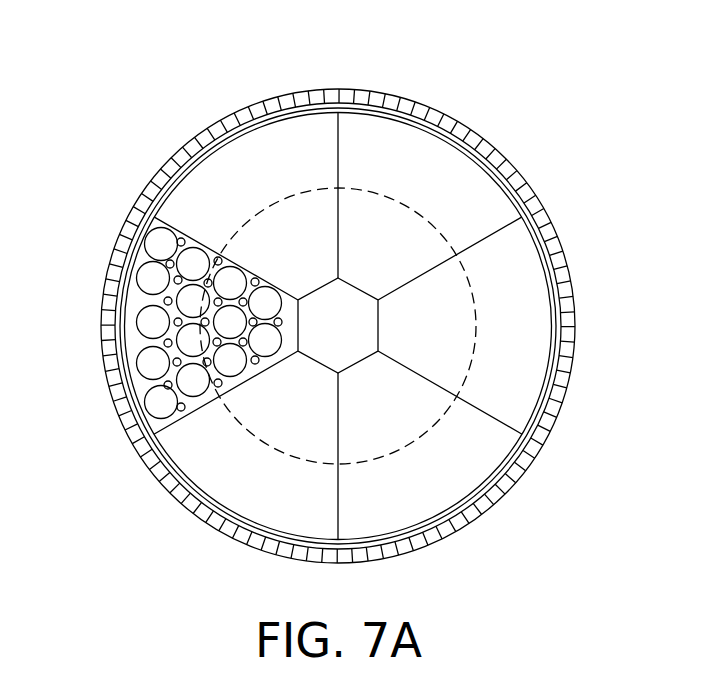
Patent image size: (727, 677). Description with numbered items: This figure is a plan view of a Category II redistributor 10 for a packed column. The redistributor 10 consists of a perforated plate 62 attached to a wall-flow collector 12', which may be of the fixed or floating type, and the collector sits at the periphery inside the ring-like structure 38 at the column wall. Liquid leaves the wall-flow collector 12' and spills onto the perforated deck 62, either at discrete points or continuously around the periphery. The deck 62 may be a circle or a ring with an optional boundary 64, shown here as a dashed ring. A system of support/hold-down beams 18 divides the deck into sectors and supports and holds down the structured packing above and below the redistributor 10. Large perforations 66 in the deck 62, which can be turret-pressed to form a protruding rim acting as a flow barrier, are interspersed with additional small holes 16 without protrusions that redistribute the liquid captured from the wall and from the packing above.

The redistributor 10 is at (530, 104).
The wall-flow collector 12' is at (368, 326).
The small holes 16 is at (162, 380).
The support/hold-down beams 18 is at (340, 146).
The armor layer 38 is at (538, 440).
The perforated plate 62 is at (517, 300).
The boundary 64 is at (473, 362).
The large perforations 66 is at (152, 278).